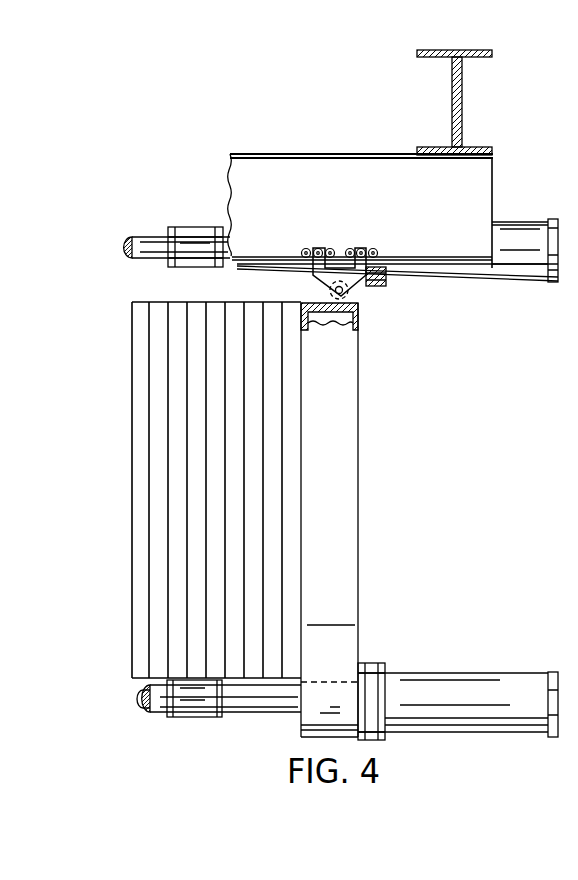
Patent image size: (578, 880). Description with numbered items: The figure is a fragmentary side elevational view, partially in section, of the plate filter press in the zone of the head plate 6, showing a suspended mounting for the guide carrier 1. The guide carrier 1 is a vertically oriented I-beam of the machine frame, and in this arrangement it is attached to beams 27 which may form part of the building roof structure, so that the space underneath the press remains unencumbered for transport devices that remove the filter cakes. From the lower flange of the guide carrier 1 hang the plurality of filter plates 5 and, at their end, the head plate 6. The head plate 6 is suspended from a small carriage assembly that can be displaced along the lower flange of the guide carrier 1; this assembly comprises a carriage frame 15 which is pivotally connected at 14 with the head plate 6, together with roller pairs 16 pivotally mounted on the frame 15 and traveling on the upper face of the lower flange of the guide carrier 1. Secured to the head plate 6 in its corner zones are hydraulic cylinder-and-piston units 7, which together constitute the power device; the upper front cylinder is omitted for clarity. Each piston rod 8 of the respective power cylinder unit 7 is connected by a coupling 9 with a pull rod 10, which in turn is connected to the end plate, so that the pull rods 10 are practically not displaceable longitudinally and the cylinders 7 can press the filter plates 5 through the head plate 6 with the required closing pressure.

The guide carrier 1 is at (493, 185).
The beams 27 is at (462, 100).
The roller pairs 16 is at (325, 248).
The carriage frame 15 is at (312, 275).
The pivotal connection 14 is at (368, 288).
The head plate 6 is at (345, 467).
The filter plates 5 is at (154, 333).
The hydraulic cylinder-and-piston unit 7 is at (453, 680).
The piston rod 8 is at (257, 702).
The coupling 9 is at (193, 708).
The pull rod 10 is at (156, 708).